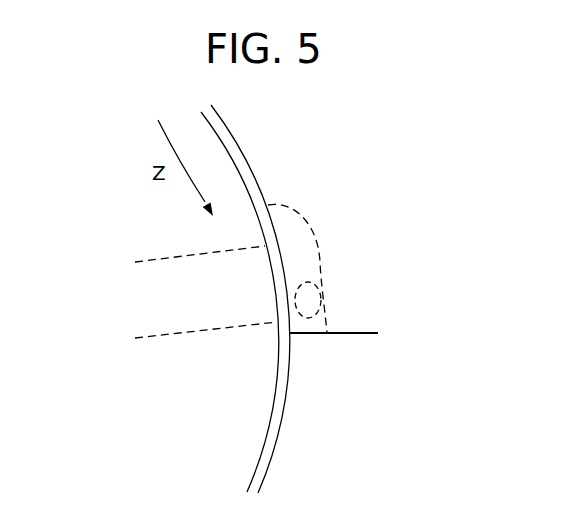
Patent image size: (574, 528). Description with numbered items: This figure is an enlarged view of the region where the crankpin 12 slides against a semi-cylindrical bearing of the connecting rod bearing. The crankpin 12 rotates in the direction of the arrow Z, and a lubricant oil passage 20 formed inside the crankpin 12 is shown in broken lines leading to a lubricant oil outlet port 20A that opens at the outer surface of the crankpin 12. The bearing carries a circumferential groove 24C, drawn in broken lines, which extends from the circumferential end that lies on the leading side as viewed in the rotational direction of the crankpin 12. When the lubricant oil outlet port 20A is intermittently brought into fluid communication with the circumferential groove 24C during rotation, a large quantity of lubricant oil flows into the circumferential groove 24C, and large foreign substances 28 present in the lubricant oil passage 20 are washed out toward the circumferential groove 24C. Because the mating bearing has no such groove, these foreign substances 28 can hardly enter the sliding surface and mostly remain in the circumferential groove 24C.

The crankpin 12 is at (252, 403).
The lubricant oil passage 20 is at (187, 333).
The lubricant oil outlet port 20A is at (278, 258).
The circumferential groove 24C is at (300, 270).
The foreign substances 28 is at (310, 298).